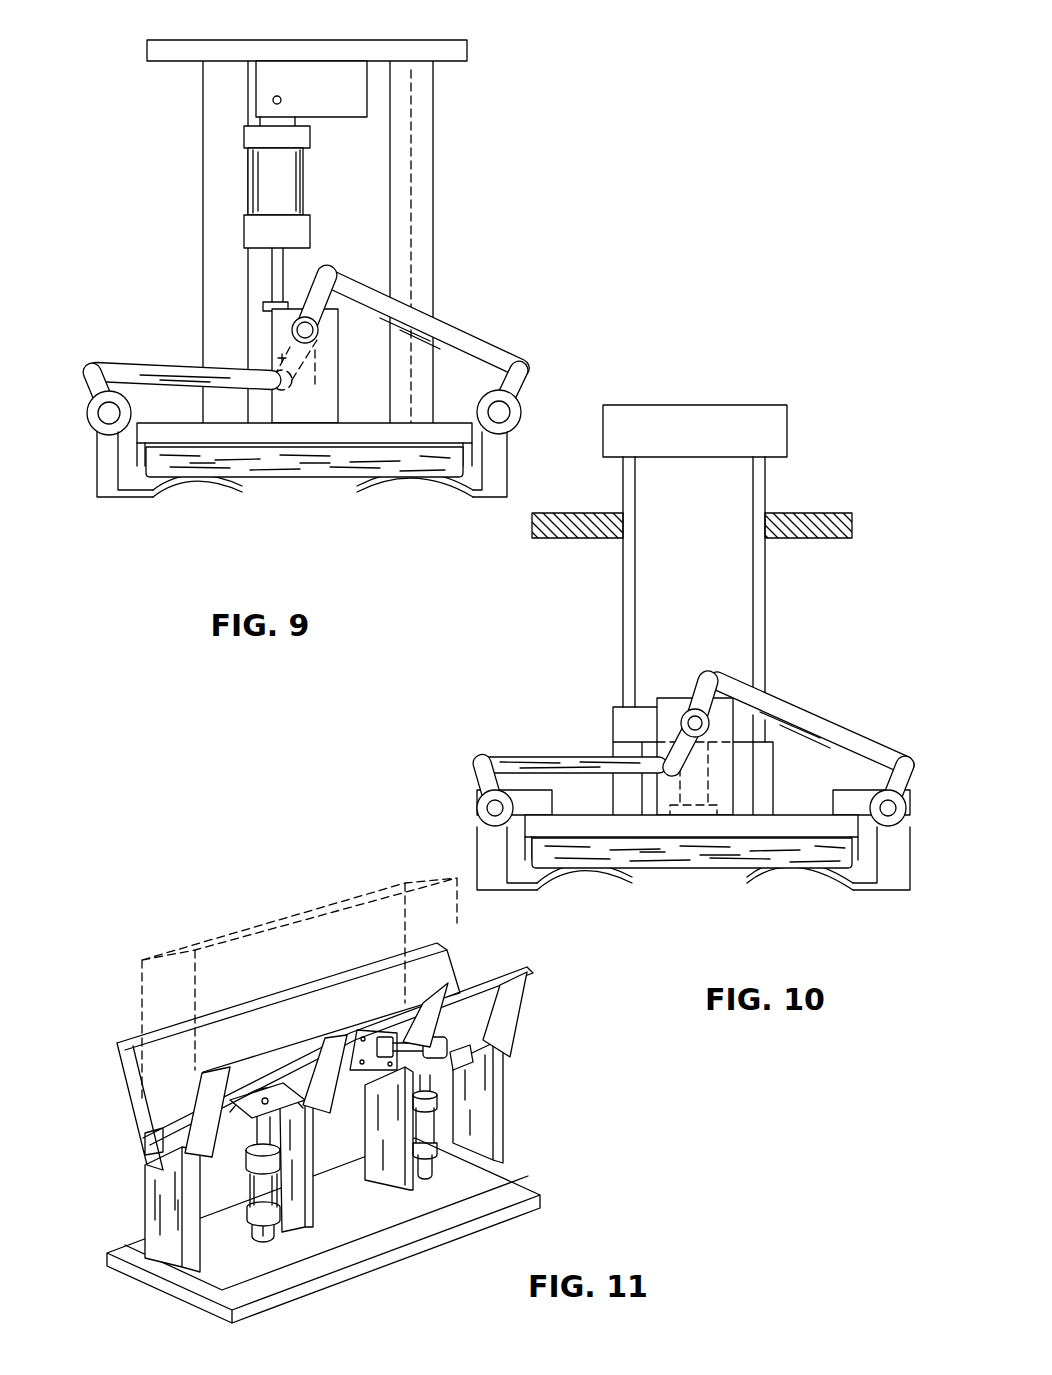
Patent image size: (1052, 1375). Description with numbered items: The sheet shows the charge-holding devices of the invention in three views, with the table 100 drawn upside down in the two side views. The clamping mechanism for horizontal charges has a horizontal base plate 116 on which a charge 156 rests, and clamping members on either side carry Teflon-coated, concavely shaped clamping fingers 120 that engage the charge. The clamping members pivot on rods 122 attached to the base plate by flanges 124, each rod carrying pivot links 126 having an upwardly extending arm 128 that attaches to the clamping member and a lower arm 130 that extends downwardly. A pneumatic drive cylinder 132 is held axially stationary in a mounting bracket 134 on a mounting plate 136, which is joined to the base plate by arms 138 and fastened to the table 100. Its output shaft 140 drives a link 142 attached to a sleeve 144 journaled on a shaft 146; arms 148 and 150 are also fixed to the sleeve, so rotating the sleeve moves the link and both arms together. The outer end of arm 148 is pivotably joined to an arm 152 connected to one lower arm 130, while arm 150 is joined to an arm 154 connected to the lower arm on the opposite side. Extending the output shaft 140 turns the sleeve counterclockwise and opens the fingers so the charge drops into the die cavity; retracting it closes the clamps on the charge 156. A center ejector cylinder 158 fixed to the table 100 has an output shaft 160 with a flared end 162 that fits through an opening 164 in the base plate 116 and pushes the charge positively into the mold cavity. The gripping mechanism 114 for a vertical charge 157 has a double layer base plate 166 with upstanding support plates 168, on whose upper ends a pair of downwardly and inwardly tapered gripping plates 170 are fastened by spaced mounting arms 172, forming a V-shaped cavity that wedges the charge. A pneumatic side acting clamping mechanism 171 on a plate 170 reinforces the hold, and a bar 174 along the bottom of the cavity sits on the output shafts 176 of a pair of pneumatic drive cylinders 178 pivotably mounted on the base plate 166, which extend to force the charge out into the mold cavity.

In FIG. 10, the table 100 is at (842, 523).
In FIG. 11, the gripping mechanism 114 is at (543, 1040).
In FIG. 9, the base plate 116 is at (175, 438).
In FIG. 9, the clamping fingers 120 is at (187, 482).
In FIG. 10, the clamping fingers 120 is at (570, 880).
In FIG. 10, the rods 122 is at (486, 812).
In FIG. 10, the flanges 124 is at (532, 800).
In FIG. 9, the pivot links 126 is at (84, 432).
In FIG. 9, the upwardly extending arm 128 is at (107, 470).
In FIG. 9, the lower arm 130 is at (92, 382).
In FIG. 9, the pneumatic drive cylinder 132 is at (265, 183).
In FIG. 9, the mounting bracket 134 is at (332, 77).
In FIG. 9, the mounting plate 136 is at (433, 47).
In FIG. 9, the arms 138 is at (215, 98).
In FIG. 9, the output shaft 140 is at (275, 272).
In FIG. 9, the link 142 is at (263, 306).
In FIG. 9, the sleeve 144 is at (305, 366).
In FIG. 9, the shaft 146 is at (312, 326).
In FIG. 9, the arm 148 is at (323, 290).
In FIG. 9, the arm 150 is at (287, 360).
In FIG. 9, the arm 152 is at (478, 347).
In FIG. 9, the arm 154 is at (133, 368).
In FIG. 9, the charge 156 is at (332, 470).
In FIG. 10, the charge 156 is at (687, 860).
In FIG. 11, the vertical charge 157 is at (288, 918).
In FIG. 10, the center ejector cylinder 158 is at (740, 493).
In FIG. 10, the output shaft 160 is at (700, 777).
In FIG. 10, the flared end 162 is at (655, 837).
In FIG. 10, the opening 164 is at (753, 817).
In FIG. 11, the double layer base plate 166 is at (515, 1175).
In FIG. 11, the support plates 168 is at (153, 1192).
In FIG. 11, the gripping plates 170 is at (228, 1030).
In FIG. 11, the side acting clamping mechanism 171 is at (463, 1063).
In FIG. 11, the mounting arms 172 is at (225, 1085).
In FIG. 11, the bar 174 is at (243, 1118).
In FIG. 11, the output shafts 176 is at (273, 1137).
In FIG. 11, the pneumatic drive cylinders 178 is at (247, 1208).